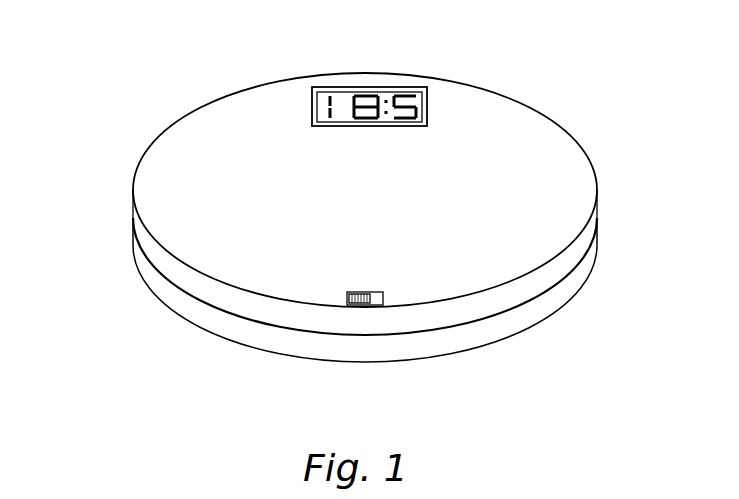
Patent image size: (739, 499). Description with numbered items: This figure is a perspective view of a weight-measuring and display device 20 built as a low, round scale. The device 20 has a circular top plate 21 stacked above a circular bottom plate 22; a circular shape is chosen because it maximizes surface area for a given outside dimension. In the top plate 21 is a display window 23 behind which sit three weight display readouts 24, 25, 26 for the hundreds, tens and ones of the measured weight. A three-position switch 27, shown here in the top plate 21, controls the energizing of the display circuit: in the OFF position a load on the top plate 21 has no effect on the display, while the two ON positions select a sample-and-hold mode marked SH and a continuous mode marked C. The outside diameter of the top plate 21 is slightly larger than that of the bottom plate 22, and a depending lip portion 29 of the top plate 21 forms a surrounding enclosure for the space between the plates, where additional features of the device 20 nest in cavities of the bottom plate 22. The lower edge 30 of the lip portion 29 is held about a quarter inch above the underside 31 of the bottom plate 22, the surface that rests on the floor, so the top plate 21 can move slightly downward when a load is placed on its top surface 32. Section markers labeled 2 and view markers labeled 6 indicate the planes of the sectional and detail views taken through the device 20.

The weight-measuring and display device 20 is at (355, 224).
The circular top plate 21 is at (572, 138).
The circular bottom plate 22 is at (598, 262).
The display window 23 is at (320, 72).
The weight display readout 24 is at (328, 97).
The weight display readout 25 is at (372, 93).
The weight display readout 26 is at (410, 93).
The three-position switch 27 is at (383, 350).
The depending lip portion 29 is at (173, 273).
The lower edge 30 is at (330, 337).
The underside 31 is at (263, 350).
The top surface 32 is at (393, 278).
The section line 2- 2 is at (93, 190).
The view line 6 is at (250, 112).